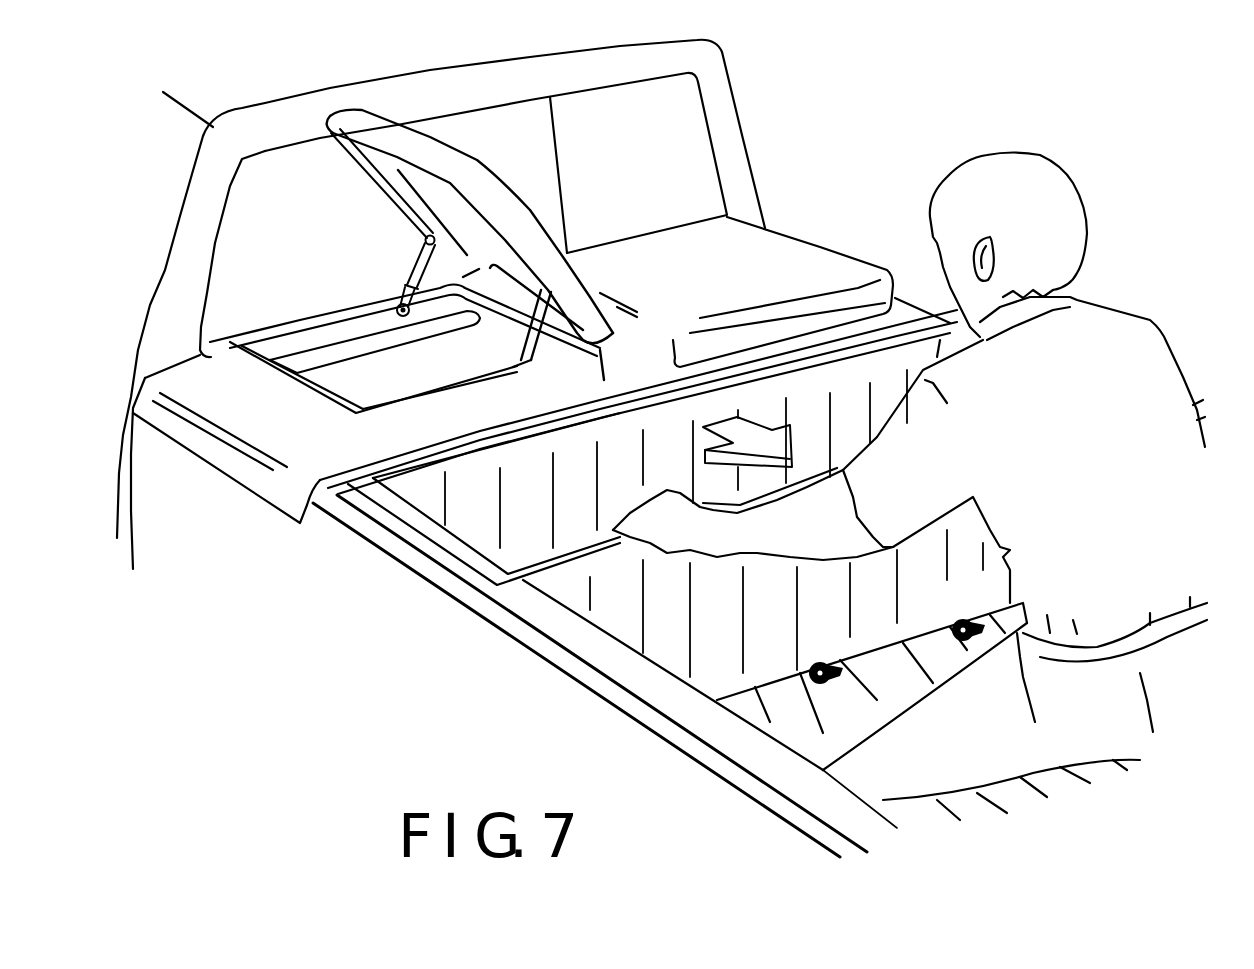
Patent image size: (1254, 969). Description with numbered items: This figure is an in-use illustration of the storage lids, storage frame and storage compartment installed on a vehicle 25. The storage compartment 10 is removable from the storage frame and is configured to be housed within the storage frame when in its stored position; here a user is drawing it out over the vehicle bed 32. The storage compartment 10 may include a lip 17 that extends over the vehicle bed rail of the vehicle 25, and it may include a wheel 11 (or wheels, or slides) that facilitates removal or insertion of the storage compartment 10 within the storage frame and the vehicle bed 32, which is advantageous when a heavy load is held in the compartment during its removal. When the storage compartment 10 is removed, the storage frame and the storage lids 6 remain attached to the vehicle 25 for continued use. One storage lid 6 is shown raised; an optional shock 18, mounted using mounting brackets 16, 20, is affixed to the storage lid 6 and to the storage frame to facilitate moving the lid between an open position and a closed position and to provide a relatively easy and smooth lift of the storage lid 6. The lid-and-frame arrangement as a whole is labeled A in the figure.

The cover assembly A is at (308, 446).
The storage lid 6 is at (722, 240).
The storage compartment 10 is at (514, 521).
The wheel 11 is at (787, 670).
The mounting bracket 16 is at (415, 238).
The lip 17 is at (477, 553).
The shock 18 is at (408, 264).
The mounting bracket 20 is at (388, 308).
The vehicle 25 is at (820, 132).
The vehicle bed 32 is at (765, 717).